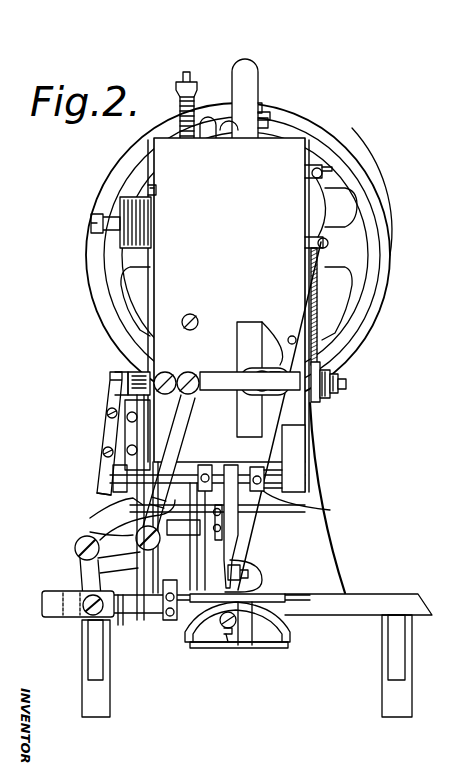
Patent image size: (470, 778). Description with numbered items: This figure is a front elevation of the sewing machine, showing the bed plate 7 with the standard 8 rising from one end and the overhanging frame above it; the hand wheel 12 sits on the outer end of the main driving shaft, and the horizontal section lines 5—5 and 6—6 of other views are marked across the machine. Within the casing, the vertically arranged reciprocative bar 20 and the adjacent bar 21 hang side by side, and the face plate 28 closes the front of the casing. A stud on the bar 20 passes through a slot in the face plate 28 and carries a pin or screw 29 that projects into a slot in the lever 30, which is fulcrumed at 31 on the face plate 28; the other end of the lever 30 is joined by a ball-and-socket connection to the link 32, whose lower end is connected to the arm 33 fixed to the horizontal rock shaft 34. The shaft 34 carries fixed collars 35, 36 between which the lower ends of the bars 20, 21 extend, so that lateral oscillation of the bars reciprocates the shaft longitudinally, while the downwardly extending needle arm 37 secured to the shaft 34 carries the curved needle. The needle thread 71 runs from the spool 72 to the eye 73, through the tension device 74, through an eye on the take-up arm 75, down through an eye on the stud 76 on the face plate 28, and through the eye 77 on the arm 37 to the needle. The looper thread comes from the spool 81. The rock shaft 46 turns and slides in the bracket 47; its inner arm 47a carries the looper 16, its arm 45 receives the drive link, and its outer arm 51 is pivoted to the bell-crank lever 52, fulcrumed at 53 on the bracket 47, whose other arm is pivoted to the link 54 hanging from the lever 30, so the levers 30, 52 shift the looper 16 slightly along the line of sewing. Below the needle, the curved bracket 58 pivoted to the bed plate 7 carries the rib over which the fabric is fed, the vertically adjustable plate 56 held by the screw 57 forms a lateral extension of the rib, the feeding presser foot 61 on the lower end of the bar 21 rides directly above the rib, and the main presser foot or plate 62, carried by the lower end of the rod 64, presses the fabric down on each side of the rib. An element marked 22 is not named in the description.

The section line 5— 5 is at (116, 313).
The hand wheel 12 is at (370, 302).
The reciprocative bar 20 is at (259, 86).
The bar 21 is at (220, 120).
The rod 64 is at (192, 74).
The face plate 28 is at (228, 315).
The spool 72 is at (262, 128).
The eye 73 is at (321, 168).
The needle thread 71 is at (325, 190).
The take-up arm 75 is at (328, 231).
The spool 81 is at (107, 256).
The stud 76 is at (288, 340).
The pin or screw 29 is at (270, 392).
The lever 30 is at (218, 380).
The fulcrum 31 is at (166, 376).
The bracket 22 is at (150, 357).
The link 32 is at (108, 437).
The link 54 is at (185, 428).
The arm 33 is at (125, 492).
The collar 36 is at (204, 468).
The needle arm 37 is at (240, 540).
The section line 6— 6 is at (205, 566).
The eye 77 is at (250, 580).
The fulcrum 53 is at (76, 542).
The bracket 47 is at (100, 525).
The bell-crank lever 52 is at (88, 572).
The arm 51 is at (62, 618).
The rock shaft 46 is at (150, 610).
The arm 47a is at (158, 615).
The looper 16 is at (180, 622).
The arm 45 is at (118, 622).
The feeding presser foot 61 is at (270, 600).
The bracket 58 is at (270, 642).
The main presser foot 62 is at (247, 647).
The screw 57 is at (226, 636).
The adjustable plate 56 is at (230, 642).
The bed plate 7 is at (350, 594).
The collar 35 is at (280, 505).
The rock shaft 34 is at (275, 495).
The standard 8 is at (308, 488).
The tension device 74 is at (322, 400).